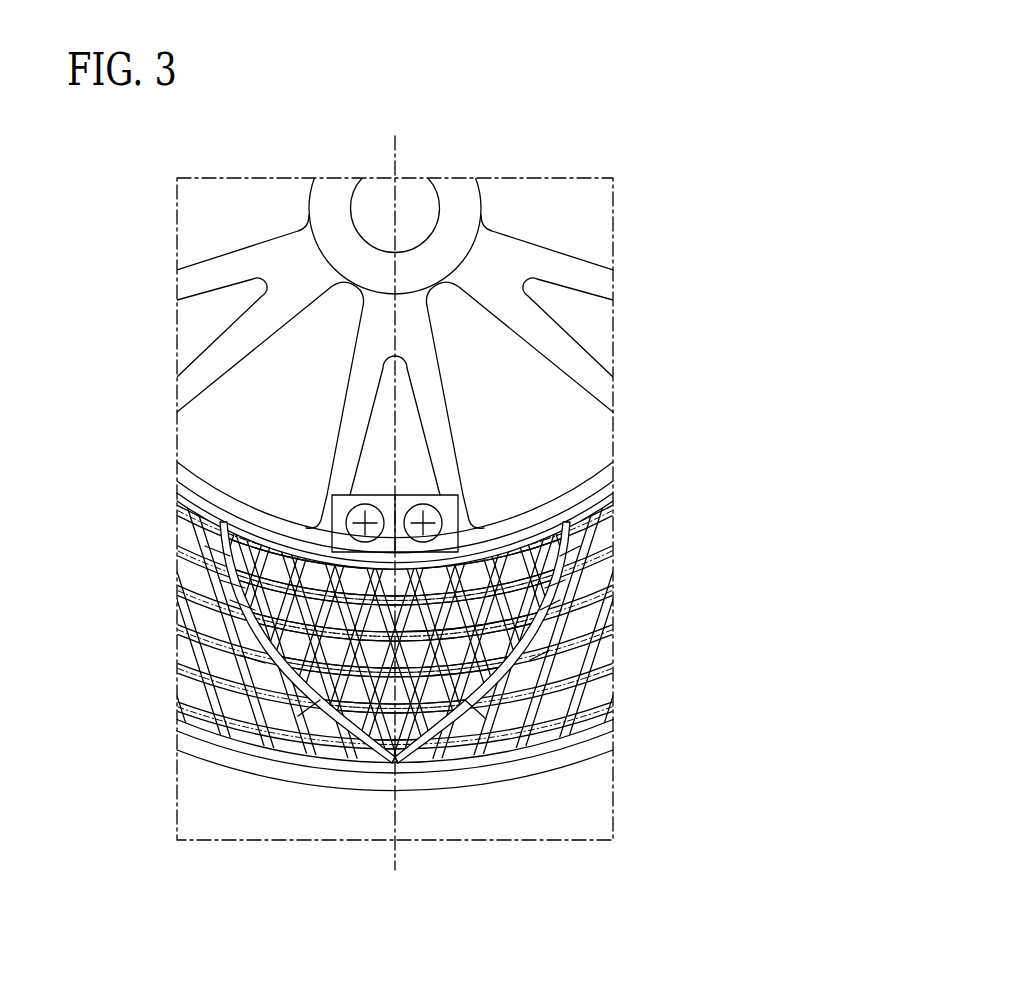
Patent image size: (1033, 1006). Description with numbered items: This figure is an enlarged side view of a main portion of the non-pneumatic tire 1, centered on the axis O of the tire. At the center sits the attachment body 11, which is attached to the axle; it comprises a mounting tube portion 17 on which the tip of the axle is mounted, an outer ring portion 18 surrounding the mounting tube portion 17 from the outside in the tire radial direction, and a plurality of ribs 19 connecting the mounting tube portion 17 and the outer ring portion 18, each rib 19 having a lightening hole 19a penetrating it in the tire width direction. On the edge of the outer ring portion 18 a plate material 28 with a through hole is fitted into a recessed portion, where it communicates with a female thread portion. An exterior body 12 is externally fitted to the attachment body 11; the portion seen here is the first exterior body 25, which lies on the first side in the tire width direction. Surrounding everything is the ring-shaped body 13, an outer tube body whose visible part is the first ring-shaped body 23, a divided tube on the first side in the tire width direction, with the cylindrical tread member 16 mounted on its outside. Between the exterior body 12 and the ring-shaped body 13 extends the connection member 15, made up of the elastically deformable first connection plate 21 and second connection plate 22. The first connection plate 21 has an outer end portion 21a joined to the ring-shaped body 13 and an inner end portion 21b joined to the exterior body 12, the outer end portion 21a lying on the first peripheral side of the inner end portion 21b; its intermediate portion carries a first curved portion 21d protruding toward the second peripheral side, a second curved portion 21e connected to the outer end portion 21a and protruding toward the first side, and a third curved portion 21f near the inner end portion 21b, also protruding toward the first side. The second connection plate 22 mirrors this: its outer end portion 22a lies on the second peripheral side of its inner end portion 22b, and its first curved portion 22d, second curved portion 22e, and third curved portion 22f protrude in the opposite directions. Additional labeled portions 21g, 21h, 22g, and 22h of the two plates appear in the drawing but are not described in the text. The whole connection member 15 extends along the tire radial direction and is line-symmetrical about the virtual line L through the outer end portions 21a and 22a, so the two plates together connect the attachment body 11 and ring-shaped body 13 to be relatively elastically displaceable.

The non-pneumatic tire 1 is at (729, 128).
The attachment body 11 is at (412, 306).
The exterior body 12 is at (602, 510).
The ring-shaped body 13 is at (560, 750).
The connection member 15 is at (387, 739).
The tread member 16 is at (541, 771).
The mounting tube portion 17 is at (478, 213).
The outer ring portion 18 is at (558, 498).
The rib 19 is at (554, 253).
The lightening hole 19a is at (596, 297).
The first connection plate 21 is at (363, 719).
The outer end portion 21a is at (388, 765).
The inner end portion 21b is at (205, 546).
The first curved portion 21d is at (240, 655).
The second curved portion 21e is at (368, 742).
The third curved portion 21f is at (220, 580).
The fourth strip 21g is at (298, 716).
The fifth strip 21h is at (230, 600).
The second connection plate 22 is at (419, 719).
The outer end portion 22a is at (403, 760).
The inner end portion 22b is at (580, 546).
The first curved portion 22d is at (550, 650).
The second curved portion 22e is at (422, 742).
The third curved portion 22f is at (565, 580).
The fourth strip 22g is at (486, 719).
The fifth strip 22h is at (560, 600).
The first ring-shaped body 23 is at (470, 763).
The first exterior body 25 is at (471, 521).
The plate material 28 is at (345, 500).